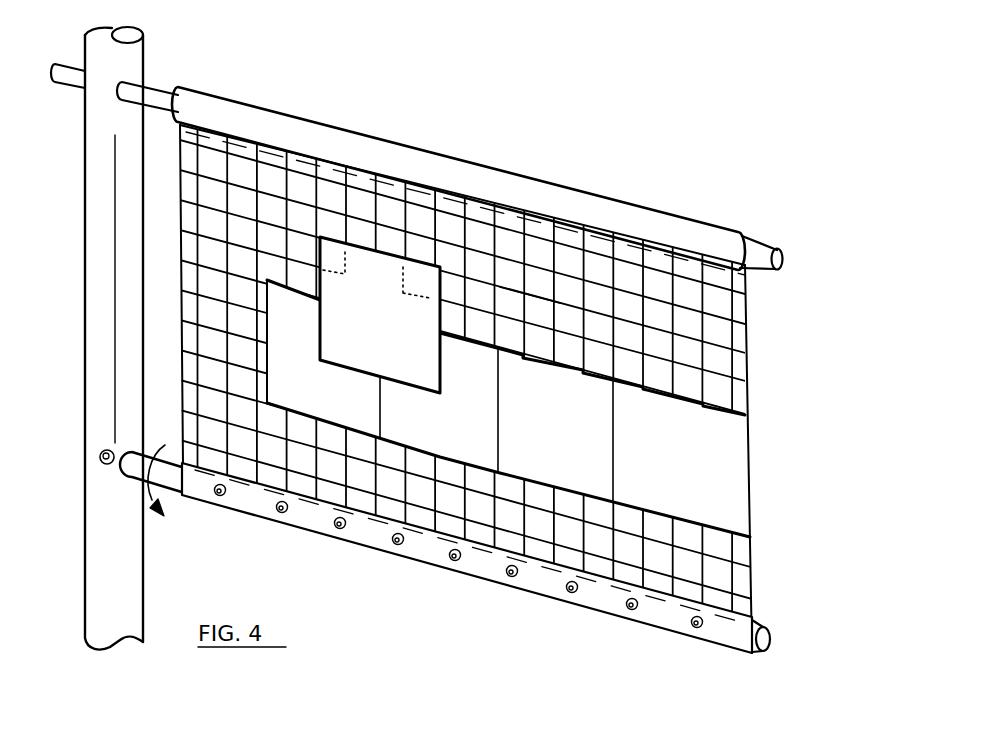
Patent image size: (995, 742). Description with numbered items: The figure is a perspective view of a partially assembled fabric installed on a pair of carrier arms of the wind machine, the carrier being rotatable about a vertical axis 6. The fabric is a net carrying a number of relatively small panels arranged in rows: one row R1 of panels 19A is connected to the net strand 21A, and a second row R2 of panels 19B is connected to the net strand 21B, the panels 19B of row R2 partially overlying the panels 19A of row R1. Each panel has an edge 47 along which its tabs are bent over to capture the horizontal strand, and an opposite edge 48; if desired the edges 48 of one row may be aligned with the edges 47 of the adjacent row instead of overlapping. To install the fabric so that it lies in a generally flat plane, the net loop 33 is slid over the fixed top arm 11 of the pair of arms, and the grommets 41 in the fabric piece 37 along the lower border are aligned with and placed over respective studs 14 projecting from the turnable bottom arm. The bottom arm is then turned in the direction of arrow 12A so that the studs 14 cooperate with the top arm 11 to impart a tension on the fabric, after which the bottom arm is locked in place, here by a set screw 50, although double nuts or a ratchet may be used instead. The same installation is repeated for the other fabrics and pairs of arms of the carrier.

The vertical axis 6 is at (112, 184).
The top arm 11 is at (765, 255).
The arrow 12A is at (170, 498).
The studs 14 is at (458, 563).
The panels 19A is at (765, 486).
The panels 19B is at (388, 252).
The net strand 21A is at (243, 277).
The net strand 21B is at (563, 302).
The net loop 33 is at (537, 195).
The fabric piece 37 is at (542, 583).
The grommets 41 is at (640, 601).
The edge 47 is at (690, 393).
The edges 48 is at (356, 437).
The set screw 50 is at (100, 461).
The row R1 is at (786, 505).
The row R2 is at (786, 390).